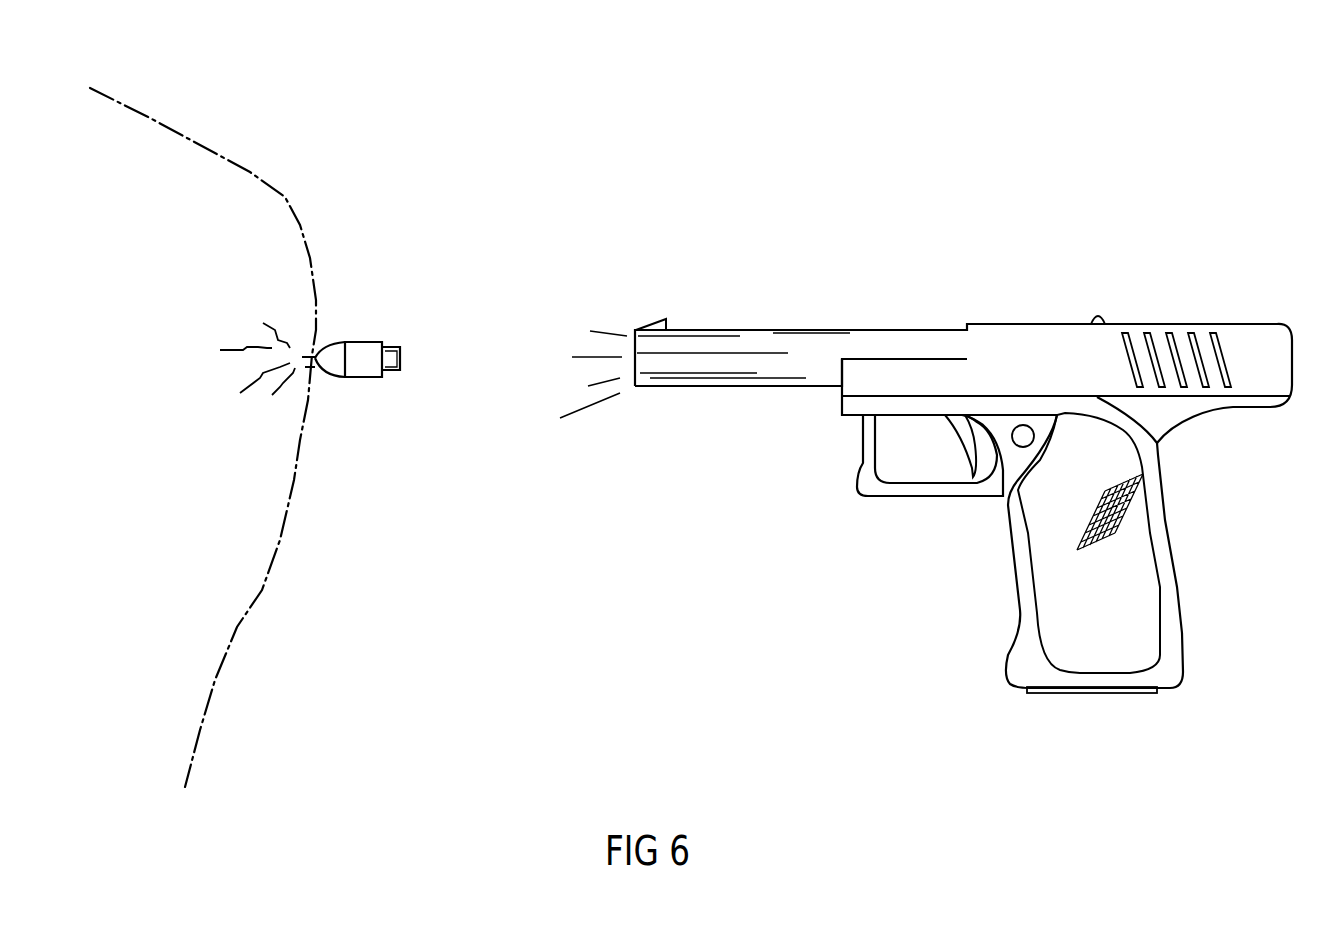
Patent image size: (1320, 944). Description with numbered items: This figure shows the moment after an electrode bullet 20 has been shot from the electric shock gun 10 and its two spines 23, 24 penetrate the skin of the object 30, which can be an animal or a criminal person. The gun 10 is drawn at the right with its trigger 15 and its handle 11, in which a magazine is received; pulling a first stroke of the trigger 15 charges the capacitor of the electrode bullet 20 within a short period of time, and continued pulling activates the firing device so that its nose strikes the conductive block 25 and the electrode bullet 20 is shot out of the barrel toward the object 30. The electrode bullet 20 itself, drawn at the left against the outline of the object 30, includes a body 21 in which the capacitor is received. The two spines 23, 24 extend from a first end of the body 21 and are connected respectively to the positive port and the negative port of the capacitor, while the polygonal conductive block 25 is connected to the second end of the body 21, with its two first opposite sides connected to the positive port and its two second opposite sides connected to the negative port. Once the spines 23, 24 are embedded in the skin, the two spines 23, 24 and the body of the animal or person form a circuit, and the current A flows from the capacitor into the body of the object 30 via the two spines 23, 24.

The gun 10 is at (926, 459).
The handle 11 is at (1165, 532).
The trigger 15 is at (968, 453).
The electrode bullet 20 is at (379, 354).
The body 21 is at (362, 375).
The spine 23 is at (315, 348).
The spine 24 is at (310, 370).
The conductive block 25 is at (392, 350).
The object 30 is at (295, 233).
The current A is at (293, 388).